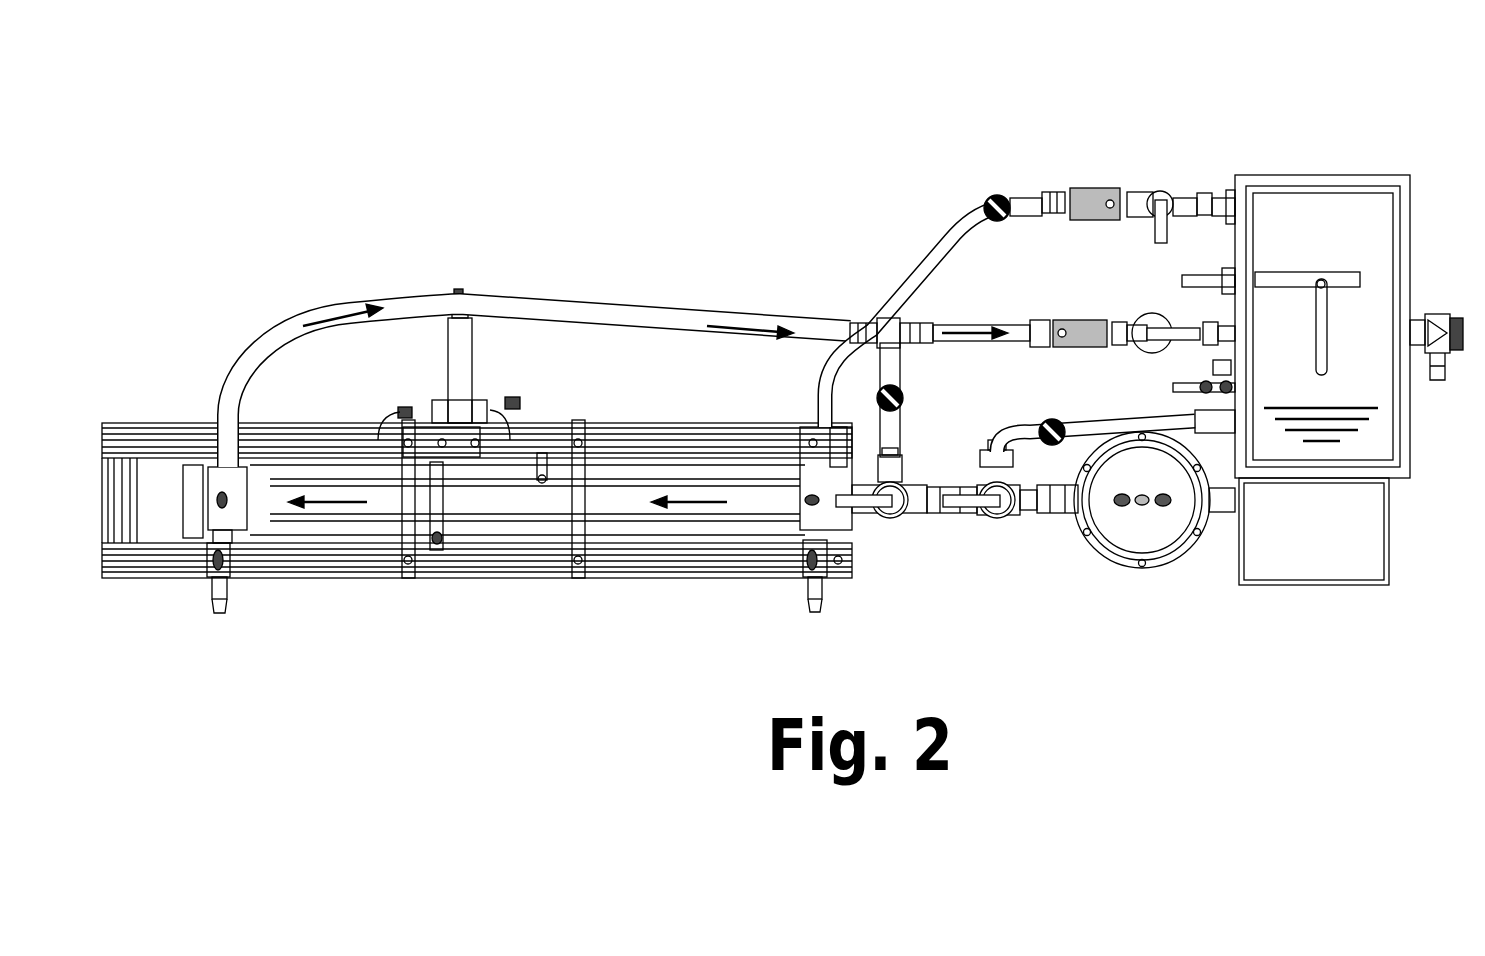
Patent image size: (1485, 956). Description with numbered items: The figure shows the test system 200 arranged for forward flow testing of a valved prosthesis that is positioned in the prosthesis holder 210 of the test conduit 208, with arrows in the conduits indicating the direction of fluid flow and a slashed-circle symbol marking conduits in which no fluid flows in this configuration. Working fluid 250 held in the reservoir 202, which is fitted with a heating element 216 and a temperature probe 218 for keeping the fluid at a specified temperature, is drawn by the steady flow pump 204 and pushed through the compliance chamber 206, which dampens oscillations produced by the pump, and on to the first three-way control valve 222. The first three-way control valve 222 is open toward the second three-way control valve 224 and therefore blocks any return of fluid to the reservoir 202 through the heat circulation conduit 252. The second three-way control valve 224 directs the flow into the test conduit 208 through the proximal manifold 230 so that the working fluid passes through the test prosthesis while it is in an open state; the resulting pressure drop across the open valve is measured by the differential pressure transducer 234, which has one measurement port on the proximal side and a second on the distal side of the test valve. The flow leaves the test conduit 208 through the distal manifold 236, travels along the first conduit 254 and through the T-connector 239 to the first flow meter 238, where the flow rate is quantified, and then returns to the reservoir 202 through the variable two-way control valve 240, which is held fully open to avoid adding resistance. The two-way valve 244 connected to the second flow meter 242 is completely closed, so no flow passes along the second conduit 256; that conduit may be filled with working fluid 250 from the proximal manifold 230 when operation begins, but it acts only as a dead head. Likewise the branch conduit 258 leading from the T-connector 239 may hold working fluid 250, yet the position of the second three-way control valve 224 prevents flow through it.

The test system 200 is at (664, 200).
The fluid reservoir 202 is at (1362, 175).
The steady flow pump 204 is at (1389, 575).
The compliance chamber 206 is at (1132, 565).
The test conduit 208 is at (377, 520).
The prosthesis holder 210 is at (462, 510).
The heating element 216 is at (1188, 282).
The temperature probe 218 is at (1173, 387).
The first 3-way control valve 222 is at (997, 520).
The second 3-way control valve 224 is at (893, 522).
The proximal manifold 230 is at (842, 523).
The differential pressure transducer 234 is at (447, 385).
The distal manifold 236 is at (212, 480).
The first flow meter 238 is at (1067, 347).
The T-connector 239 is at (877, 328).
The variable 2-way control valve 240 is at (1125, 318).
The second flow meter 242 is at (1082, 190).
The 2-way control valve 244 is at (1156, 190).
The working fluid 250 is at (1330, 441).
The heat circulation conduit 252 is at (1003, 430).
The first conduit 254 is at (598, 297).
The second conduit 256 is at (932, 257).
The branch conduit 258 is at (897, 361).